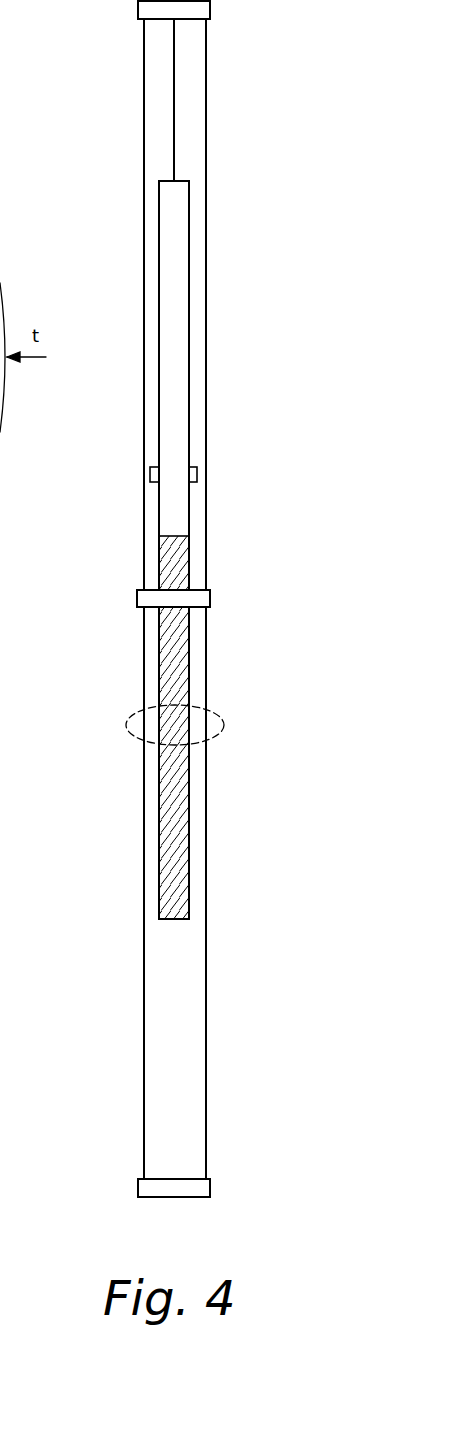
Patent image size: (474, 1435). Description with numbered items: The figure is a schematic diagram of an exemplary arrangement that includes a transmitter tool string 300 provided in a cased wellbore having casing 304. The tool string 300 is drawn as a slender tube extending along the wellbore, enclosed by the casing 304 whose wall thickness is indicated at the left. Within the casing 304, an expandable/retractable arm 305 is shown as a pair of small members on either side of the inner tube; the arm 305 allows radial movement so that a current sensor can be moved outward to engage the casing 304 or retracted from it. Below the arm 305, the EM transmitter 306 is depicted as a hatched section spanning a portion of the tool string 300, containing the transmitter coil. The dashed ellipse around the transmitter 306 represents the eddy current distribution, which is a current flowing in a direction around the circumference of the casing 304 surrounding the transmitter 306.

The transmitter tool string 300 is at (190, 599).
The casing 304 is at (143, 1052).
The expandable/retractable arm 305 is at (150, 475).
The EM transmitter 306 is at (109, 727).